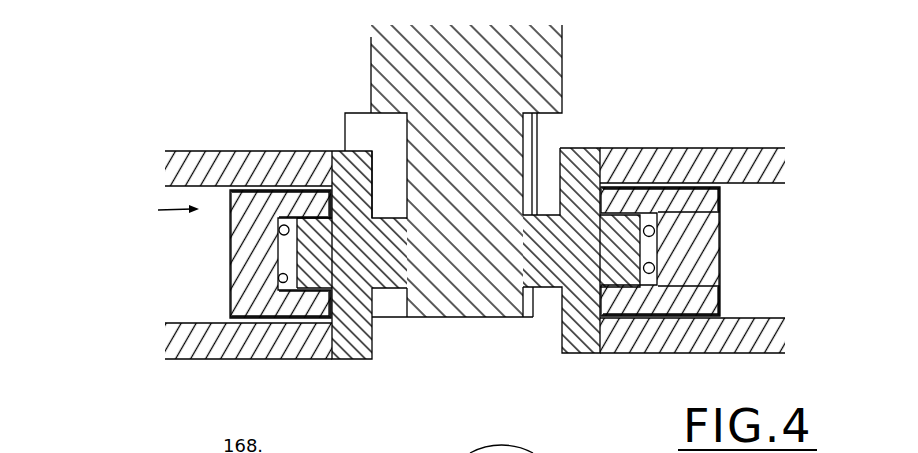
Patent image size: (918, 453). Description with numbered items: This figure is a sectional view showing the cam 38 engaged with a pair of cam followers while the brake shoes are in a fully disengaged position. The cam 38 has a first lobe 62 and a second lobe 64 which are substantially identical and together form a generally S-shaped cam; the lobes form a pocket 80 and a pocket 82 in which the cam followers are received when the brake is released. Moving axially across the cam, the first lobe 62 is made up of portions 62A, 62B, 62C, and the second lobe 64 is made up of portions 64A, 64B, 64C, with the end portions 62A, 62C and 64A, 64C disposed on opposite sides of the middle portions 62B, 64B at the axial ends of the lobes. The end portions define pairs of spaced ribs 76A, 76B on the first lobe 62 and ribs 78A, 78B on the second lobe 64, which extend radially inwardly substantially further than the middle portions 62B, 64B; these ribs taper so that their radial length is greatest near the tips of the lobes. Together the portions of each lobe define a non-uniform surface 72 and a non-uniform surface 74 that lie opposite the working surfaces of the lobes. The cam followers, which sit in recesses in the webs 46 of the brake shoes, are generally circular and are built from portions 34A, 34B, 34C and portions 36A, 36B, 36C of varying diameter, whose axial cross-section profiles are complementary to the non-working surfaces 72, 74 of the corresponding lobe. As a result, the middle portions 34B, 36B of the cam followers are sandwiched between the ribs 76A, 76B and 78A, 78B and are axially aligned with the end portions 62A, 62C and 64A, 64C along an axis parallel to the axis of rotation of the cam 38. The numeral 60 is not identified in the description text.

The housing 60 is at (563, 45).
The portion of cam follower 34C is at (363, 202).
The portion of cam follower 34B is at (378, 270).
The portion of cam follower 34A is at (372, 318).
The portion of cam follower 36C is at (557, 197).
The portion of cam follower 36B is at (580, 263).
The portion of cam follower 36A is at (572, 303).
The web 46 is at (203, 160).
The pocket 82 is at (763, 162).
The first lobe 62 is at (246, 247).
The portion of first lobe 62A is at (273, 313).
The portion of first lobe 62B is at (247, 270).
The portion of first lobe 62C is at (278, 220).
The rib 76A is at (307, 307).
The rib 76B is at (313, 200).
The pocket 80 is at (280, 224).
The non-uniform surface 72 is at (278, 277).
The second lobe 64 is at (746, 207).
The portion of second lobe 64A is at (647, 308).
The portion of second lobe 64B is at (707, 240).
The portion of second lobe 64C is at (700, 198).
The rib 78A is at (623, 302).
The rib 78B is at (640, 198).
The non-uniform surface 74 is at (650, 269).
The cam 38 is at (162, 213).